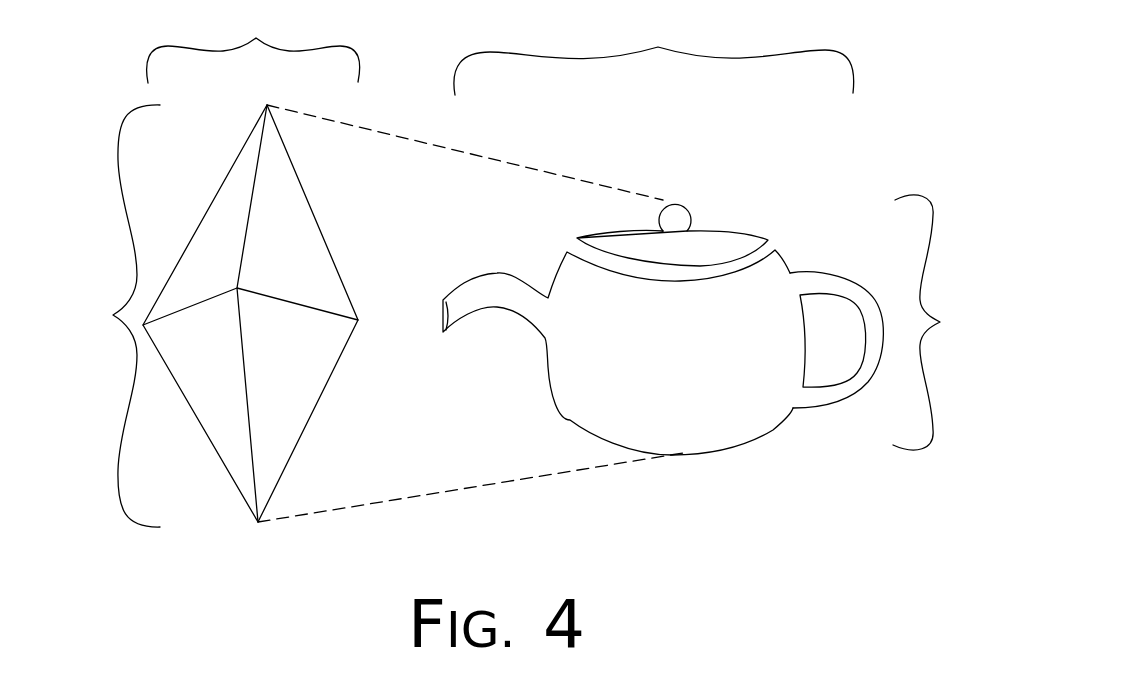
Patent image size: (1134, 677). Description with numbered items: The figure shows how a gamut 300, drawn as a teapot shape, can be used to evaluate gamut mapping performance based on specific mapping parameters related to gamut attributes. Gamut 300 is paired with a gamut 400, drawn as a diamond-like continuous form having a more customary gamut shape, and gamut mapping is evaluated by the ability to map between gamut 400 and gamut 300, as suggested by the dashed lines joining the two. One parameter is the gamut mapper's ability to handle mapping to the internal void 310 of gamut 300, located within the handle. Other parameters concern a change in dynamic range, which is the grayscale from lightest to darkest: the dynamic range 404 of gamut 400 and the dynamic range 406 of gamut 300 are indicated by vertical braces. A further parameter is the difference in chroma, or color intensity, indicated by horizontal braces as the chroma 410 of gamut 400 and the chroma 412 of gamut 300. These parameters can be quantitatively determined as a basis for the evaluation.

The gamut 300 is at (663, 313).
The internal void 310 is at (818, 353).
The gamut 400 is at (228, 145).
The dynamic range 404 is at (116, 316).
The dynamic range 406 is at (939, 322).
The chroma 410 is at (253, 47).
The chroma 412 is at (654, 57).